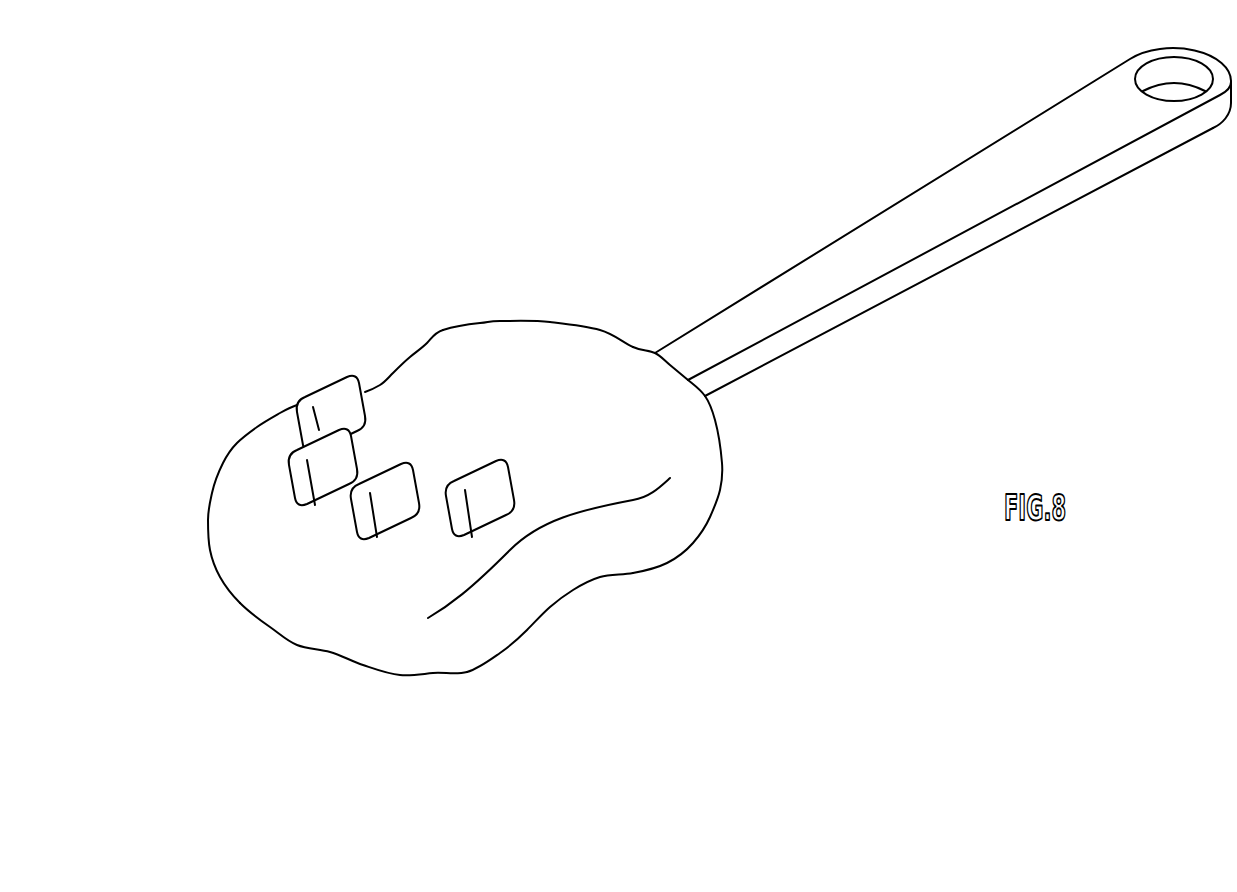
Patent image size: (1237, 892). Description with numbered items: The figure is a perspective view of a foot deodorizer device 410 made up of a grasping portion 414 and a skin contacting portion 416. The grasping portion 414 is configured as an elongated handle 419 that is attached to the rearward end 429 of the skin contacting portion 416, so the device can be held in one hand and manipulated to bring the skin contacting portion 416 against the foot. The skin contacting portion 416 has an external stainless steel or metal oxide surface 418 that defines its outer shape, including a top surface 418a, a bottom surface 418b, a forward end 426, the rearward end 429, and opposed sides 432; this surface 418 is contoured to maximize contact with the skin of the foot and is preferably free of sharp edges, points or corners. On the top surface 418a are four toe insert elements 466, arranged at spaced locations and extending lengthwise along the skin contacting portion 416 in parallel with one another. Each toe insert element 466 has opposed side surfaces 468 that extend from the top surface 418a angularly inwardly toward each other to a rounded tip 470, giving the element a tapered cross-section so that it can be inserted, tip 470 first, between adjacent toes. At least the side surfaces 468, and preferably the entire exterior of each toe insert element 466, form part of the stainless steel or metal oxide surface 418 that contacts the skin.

The deodorizer device 410 is at (681, 389).
The grasping portion 414 is at (929, 180).
The handle 419 is at (1000, 218).
The skin contacting portion 416 is at (427, 485).
The rearward end 429 is at (617, 327).
The external stainless steel or metal oxide surface 418 is at (307, 557).
The top surface 418a is at (410, 413).
The bottom surface 418b is at (585, 585).
The forward end 426 is at (220, 523).
The opposed sides 432 is at (373, 378).
The toe insert elements 466 is at (298, 473).
The side surfaces 468 is at (445, 493).
The rounded tip 470 is at (477, 475).